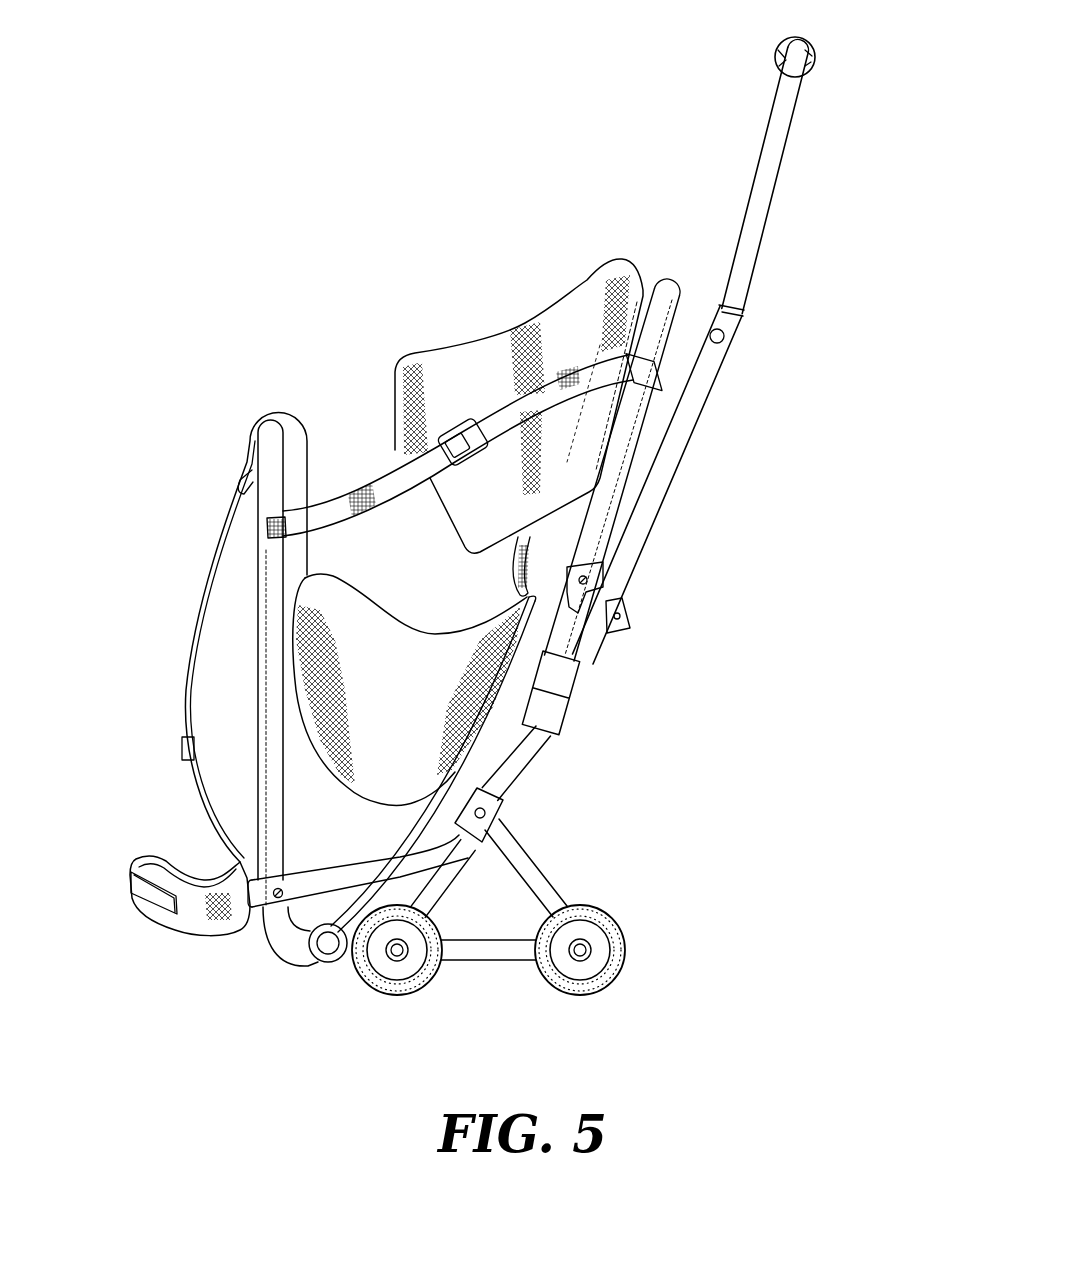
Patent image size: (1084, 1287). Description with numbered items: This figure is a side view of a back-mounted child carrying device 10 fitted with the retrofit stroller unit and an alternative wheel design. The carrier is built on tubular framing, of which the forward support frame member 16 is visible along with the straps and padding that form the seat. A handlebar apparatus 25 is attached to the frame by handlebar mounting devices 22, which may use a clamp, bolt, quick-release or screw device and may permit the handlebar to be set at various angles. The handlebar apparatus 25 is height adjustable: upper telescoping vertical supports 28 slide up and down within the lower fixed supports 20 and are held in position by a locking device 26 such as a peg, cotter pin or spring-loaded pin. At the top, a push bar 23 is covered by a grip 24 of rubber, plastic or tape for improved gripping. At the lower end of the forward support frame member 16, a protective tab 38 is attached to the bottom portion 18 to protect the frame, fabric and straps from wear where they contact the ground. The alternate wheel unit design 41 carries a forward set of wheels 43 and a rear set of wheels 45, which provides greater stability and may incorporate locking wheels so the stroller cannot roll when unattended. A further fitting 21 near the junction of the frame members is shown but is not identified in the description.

The child carrying device 10 is at (226, 376).
The forward support frame member 16 is at (288, 822).
The bottom portion 18 is at (318, 952).
The lower fixed supports 20 is at (686, 465).
The bracket 21 is at (620, 617).
The handlebar mounting devices 22 is at (566, 688).
The push bar 23 is at (781, 50).
The grip 24 is at (814, 58).
The handlebar apparatus 25 is at (739, 113).
The locking device 26 is at (725, 335).
The upper telescoping vertical supports 28 is at (774, 186).
The protective tab 38 is at (324, 966).
The wheel unit 41 is at (606, 828).
The forward set of wheels 43 is at (430, 975).
The rear set of wheels 45 is at (608, 975).